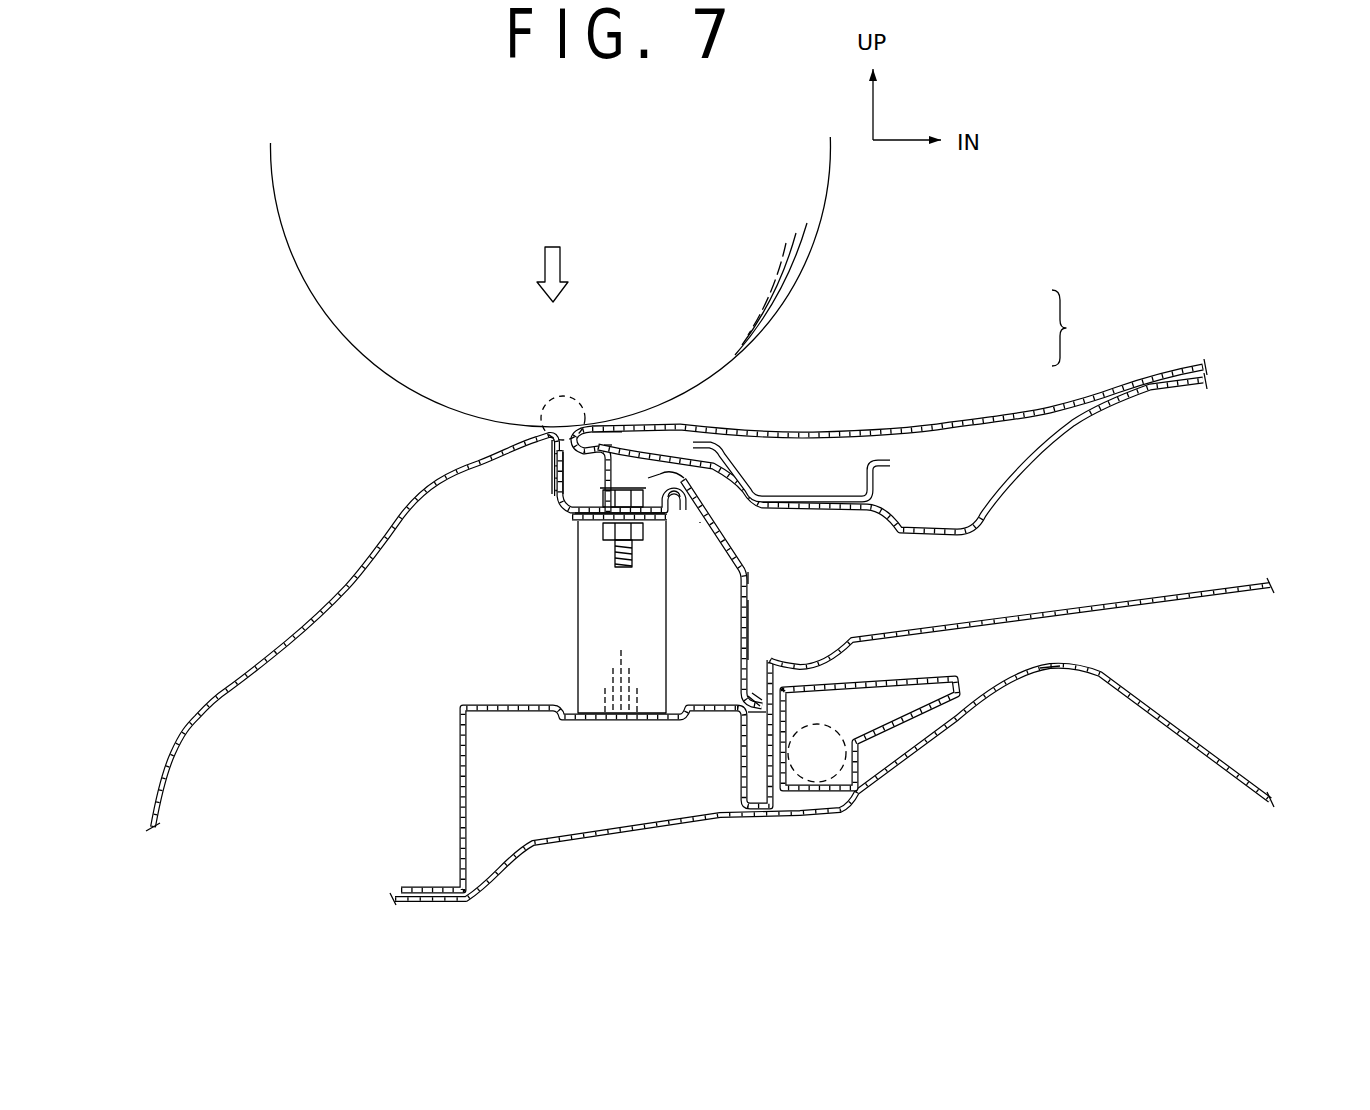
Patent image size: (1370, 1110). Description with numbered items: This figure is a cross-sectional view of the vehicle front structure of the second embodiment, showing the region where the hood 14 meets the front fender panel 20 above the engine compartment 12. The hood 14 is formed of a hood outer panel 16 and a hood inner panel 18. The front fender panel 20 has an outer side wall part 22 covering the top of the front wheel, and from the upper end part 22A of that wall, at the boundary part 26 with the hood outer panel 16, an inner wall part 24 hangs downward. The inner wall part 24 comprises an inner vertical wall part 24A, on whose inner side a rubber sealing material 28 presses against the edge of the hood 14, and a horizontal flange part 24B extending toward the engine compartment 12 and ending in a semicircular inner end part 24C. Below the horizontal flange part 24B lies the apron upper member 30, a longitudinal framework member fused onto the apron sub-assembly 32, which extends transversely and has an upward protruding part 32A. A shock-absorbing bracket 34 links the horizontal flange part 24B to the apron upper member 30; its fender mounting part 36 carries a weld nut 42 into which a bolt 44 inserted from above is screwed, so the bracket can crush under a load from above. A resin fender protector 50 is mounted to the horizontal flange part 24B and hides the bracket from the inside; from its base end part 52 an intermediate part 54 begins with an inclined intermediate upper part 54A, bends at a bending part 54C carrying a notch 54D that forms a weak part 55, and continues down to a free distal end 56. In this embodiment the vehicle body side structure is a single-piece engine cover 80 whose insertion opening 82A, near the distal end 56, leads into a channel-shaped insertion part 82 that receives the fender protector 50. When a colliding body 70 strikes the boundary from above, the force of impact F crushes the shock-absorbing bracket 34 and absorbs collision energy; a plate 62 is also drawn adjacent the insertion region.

The engine compartment 12 is at (1121, 527).
The hood 14 is at (1078, 328).
The hood outer panel 16 is at (972, 418).
The hood inner panel 18 is at (1032, 460).
The front fender panel 20 is at (336, 512).
The outer side wall part 22 is at (343, 580).
The upper end part 22A is at (550, 434).
The inner wall part 24 is at (562, 504).
The inner vertical wall part 24A is at (548, 499).
The horizontal flange part 24B is at (595, 527).
The inner end part 24C is at (686, 510).
The boundary part 26 is at (575, 396).
The sealing material 28 is at (610, 440).
The apron upper member 30 is at (448, 759).
The apron sub-assembly 32 is at (631, 834).
The protruding part 32A is at (1157, 651).
The shock-absorbing bracket 34 is at (560, 632).
The fender mounting part 36 is at (603, 523).
The weld nut 42 is at (642, 522).
The bolt 44 is at (627, 487).
The fender protector 50 is at (778, 552).
The base end part 52 is at (707, 434).
The intermediate part 54 is at (770, 607).
The intermediate upper part 54A is at (745, 690).
The bending part 54C is at (749, 580).
The notch 54D is at (738, 582).
The weak part 55 is at (770, 578).
The distal end 56 is at (790, 733).
The reinforcing plate 62 is at (913, 675).
The colliding body 70 is at (790, 288).
The engine cover 80 is at (888, 625).
The insertion part 82 is at (770, 748).
The insertion opening 82A is at (743, 715).
The force of impact F is at (560, 258).